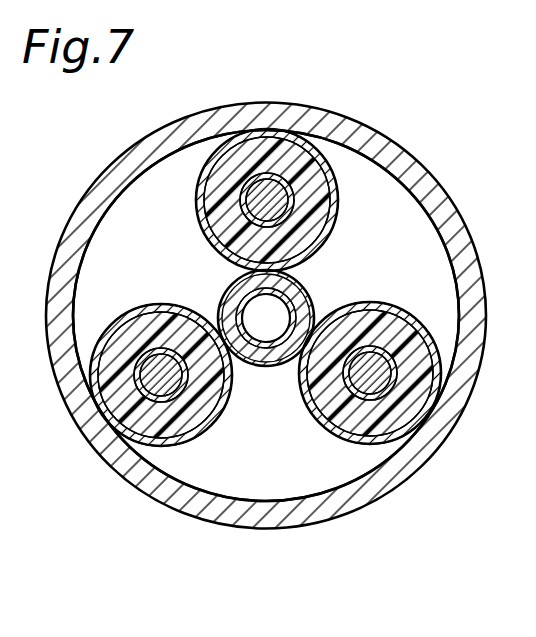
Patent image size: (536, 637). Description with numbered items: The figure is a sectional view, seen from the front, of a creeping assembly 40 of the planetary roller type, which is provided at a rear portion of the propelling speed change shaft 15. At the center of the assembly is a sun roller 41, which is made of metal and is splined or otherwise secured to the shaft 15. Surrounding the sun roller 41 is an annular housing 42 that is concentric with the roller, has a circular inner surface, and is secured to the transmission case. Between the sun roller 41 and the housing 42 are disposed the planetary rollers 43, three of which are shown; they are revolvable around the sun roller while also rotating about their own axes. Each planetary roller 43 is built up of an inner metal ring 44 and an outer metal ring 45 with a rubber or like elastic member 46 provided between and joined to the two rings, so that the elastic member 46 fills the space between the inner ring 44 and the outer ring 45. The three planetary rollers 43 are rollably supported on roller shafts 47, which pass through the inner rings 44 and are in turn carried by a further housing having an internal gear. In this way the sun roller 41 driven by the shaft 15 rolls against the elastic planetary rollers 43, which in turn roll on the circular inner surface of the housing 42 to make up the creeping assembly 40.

The propelling speed change shaft 15 is at (270, 347).
The creeping assembly 40 is at (422, 155).
The sun roller 41 is at (232, 290).
The annular housing 42 is at (486, 284).
The planetary rollers 43 is at (195, 195).
The inner metal ring 44 is at (288, 208).
The outer metal ring 45 is at (318, 243).
The elastic member 46 is at (320, 187).
The roller shafts 47 is at (243, 202).